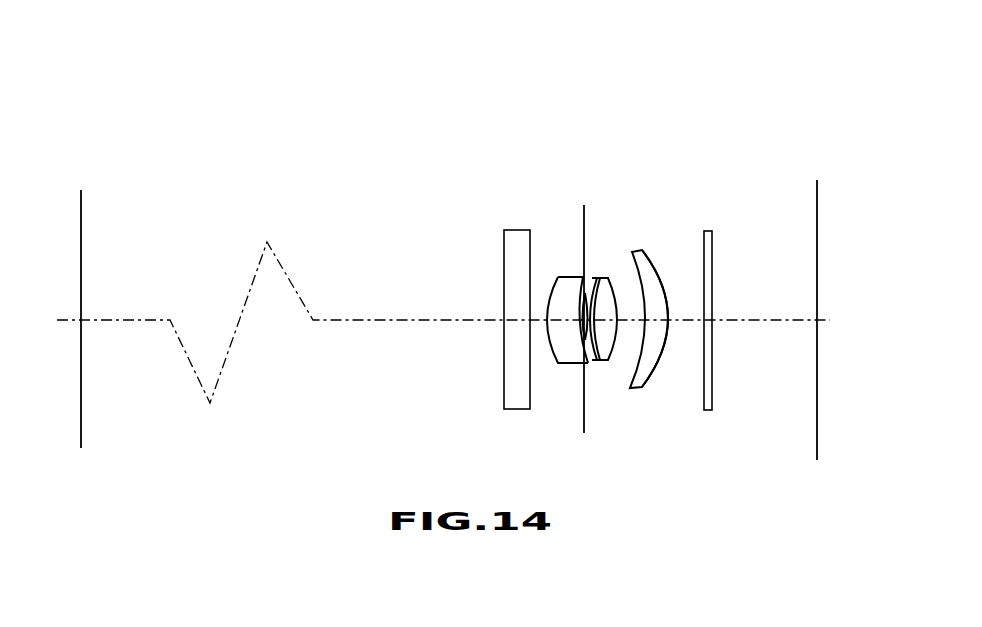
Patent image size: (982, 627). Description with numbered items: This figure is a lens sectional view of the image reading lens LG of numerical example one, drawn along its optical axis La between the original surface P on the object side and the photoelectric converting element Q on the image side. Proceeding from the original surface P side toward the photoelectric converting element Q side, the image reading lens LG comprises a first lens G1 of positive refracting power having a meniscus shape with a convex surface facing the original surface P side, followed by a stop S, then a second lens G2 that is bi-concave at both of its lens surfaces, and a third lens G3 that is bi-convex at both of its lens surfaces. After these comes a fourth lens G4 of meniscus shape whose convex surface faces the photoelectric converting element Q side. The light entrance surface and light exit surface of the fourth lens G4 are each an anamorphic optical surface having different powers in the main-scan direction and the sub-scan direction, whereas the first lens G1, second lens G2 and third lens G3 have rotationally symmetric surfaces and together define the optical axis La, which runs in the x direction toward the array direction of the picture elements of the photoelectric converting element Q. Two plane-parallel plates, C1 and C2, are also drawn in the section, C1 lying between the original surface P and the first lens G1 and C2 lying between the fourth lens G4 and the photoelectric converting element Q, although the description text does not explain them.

The original surface P is at (81, 215).
The photoelectric converting element Q is at (817, 203).
The optical axis La is at (392, 322).
The image reading lens LG is at (732, 88).
The stop S is at (582, 243).
The first cover glass C1 is at (505, 230).
The second cover glass C2 is at (712, 240).
The first lens G1 is at (563, 287).
The second lens G2 is at (612, 297).
The third lens G3 is at (632, 252).
The fourth lens G4 is at (653, 256).